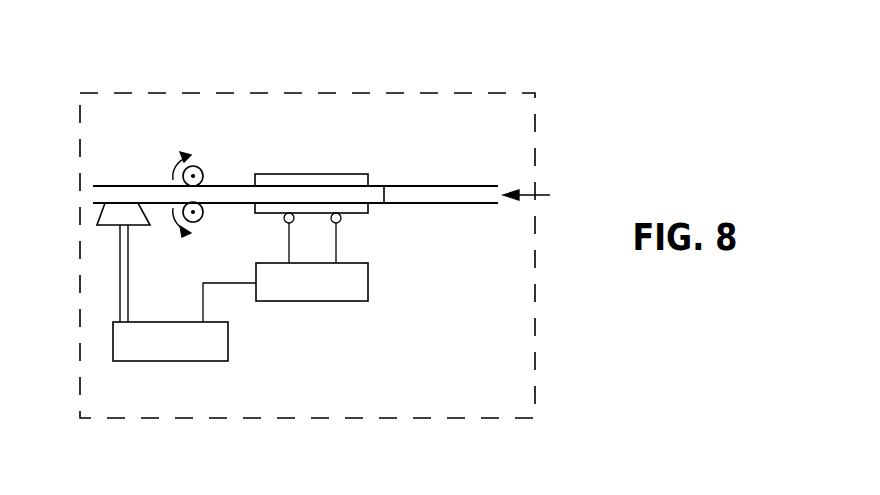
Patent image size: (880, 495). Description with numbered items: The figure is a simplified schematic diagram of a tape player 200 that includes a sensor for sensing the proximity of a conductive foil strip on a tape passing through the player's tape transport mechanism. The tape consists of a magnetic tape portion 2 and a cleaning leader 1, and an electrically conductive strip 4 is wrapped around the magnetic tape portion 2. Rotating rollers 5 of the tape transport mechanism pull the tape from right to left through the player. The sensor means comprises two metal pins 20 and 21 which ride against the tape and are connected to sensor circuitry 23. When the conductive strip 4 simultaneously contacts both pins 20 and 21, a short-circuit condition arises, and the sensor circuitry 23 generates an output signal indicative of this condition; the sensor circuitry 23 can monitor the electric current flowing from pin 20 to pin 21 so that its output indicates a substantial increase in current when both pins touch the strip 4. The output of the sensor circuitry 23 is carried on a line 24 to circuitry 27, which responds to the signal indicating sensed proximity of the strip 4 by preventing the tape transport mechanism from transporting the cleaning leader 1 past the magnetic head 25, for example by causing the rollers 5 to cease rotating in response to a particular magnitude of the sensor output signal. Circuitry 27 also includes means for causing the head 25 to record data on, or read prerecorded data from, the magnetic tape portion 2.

The cleaning leader 1 is at (468, 186).
The magnetic tape portion 2 is at (217, 197).
The electrically conductive strip 4 is at (330, 174).
The rotating rollers 5 is at (197, 166).
The metal pin 20 is at (284, 222).
The metal pin 21 is at (340, 222).
The sensor circuitry 23 is at (312, 297).
The line 24 is at (205, 303).
The magnetic head 25 is at (108, 216).
The circuitry 27 is at (125, 343).
The tape player 200 is at (420, 422).